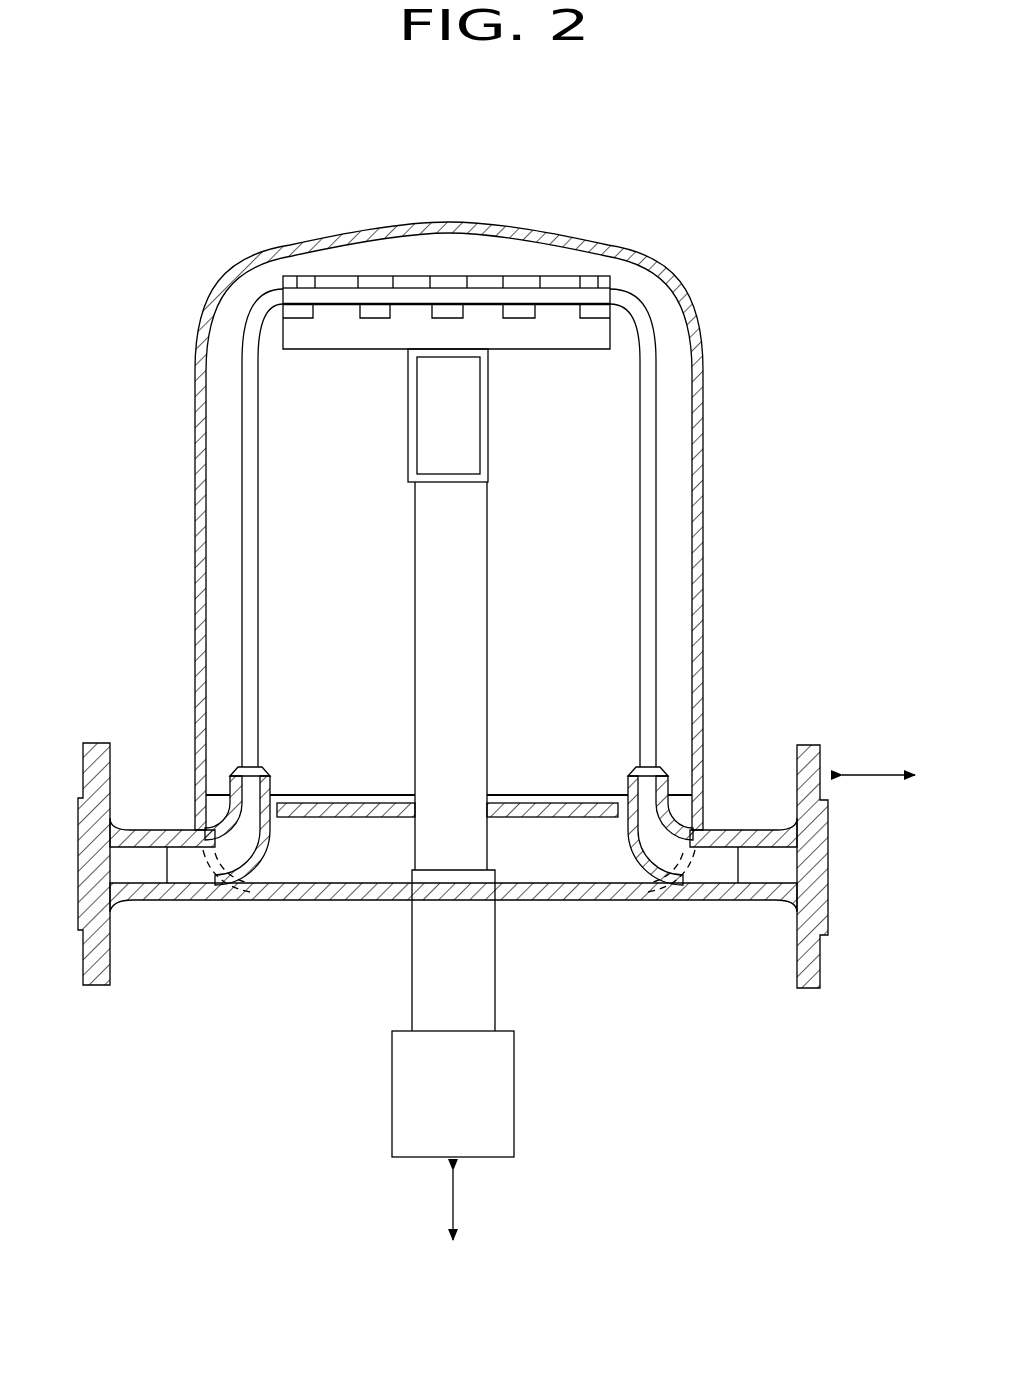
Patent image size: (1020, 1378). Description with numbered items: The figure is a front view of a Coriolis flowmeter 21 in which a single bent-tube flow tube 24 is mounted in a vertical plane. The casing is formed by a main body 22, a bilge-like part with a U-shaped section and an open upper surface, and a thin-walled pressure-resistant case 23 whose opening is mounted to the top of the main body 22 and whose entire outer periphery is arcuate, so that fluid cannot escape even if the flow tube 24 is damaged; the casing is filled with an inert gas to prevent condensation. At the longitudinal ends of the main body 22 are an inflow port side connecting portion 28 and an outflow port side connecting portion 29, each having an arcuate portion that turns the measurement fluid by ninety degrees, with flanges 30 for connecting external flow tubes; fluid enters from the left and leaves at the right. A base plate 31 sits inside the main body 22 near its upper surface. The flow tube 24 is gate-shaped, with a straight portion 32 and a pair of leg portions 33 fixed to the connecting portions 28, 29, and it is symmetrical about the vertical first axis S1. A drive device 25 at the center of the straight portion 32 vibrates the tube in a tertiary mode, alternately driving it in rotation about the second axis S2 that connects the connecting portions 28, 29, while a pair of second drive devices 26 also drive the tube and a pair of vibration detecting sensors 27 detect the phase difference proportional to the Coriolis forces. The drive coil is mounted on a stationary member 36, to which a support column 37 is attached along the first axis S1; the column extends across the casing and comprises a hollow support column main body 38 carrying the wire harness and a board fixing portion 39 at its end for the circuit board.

The Coriolis flowmeter 21 is at (584, 210).
The main body 22 is at (325, 892).
The pressure-resistant case 23 is at (700, 487).
The flow tube 24 is at (422, 528).
The drive device 25 is at (447, 274).
The second drive devices 26 is at (296, 274).
The vibration detecting sensors 27 is at (372, 320).
The inflow port side connecting portion 28 is at (245, 833).
The outflow port side connecting portion 29 is at (690, 813).
The flanges 30 is at (105, 960).
The base plate 31 is at (534, 808).
The straight portion 32 is at (490, 300).
The leg portions 33 is at (250, 574).
The stationary member 36 is at (322, 333).
The support column 37 is at (390, 1072).
The support column main body 38 is at (460, 590).
The board fixing portion 39 is at (408, 455).
The first axis S1 is at (458, 1203).
The second axis S2 is at (878, 773).